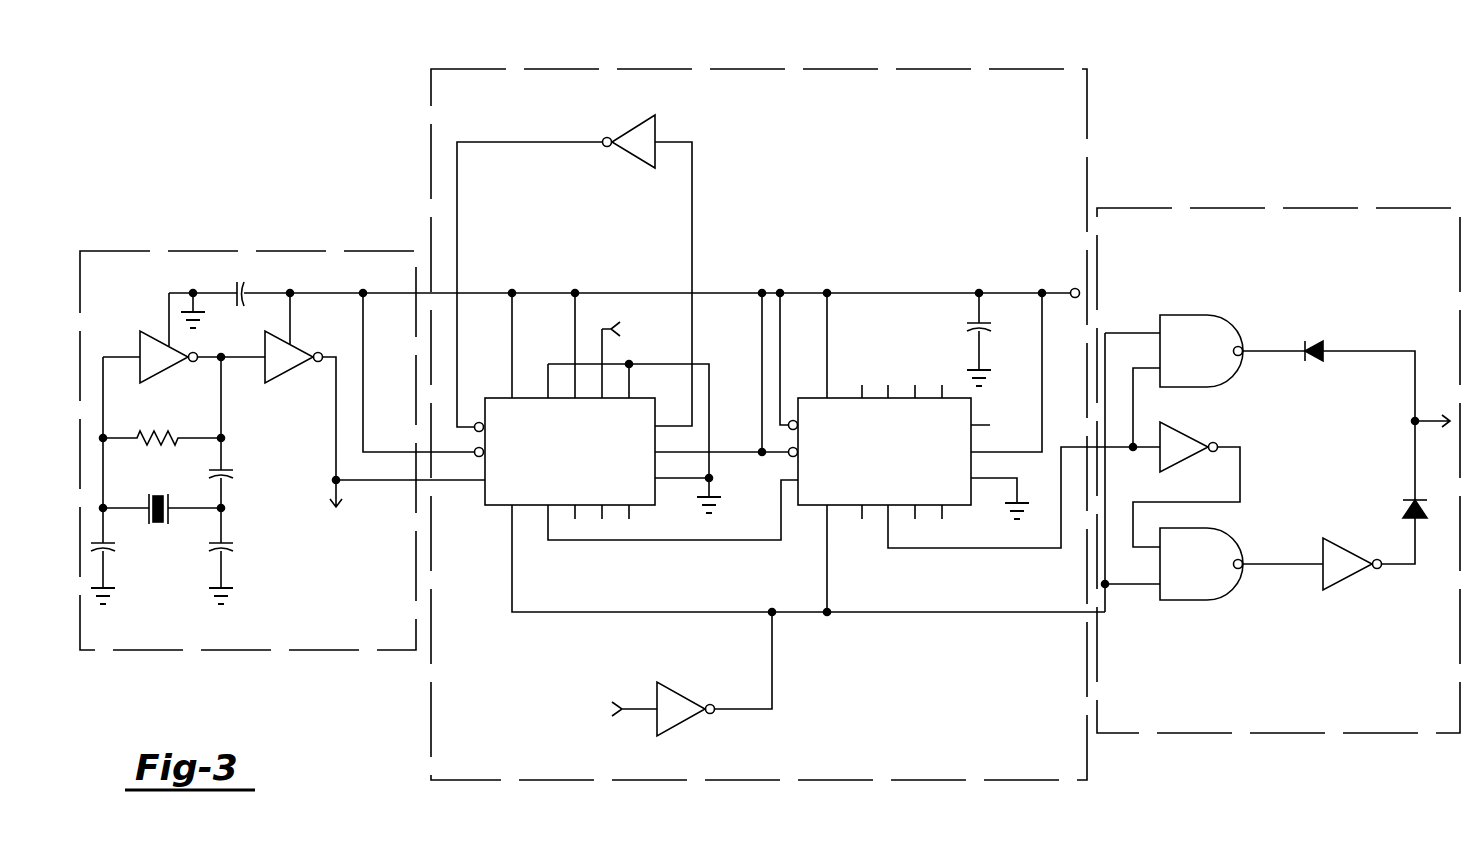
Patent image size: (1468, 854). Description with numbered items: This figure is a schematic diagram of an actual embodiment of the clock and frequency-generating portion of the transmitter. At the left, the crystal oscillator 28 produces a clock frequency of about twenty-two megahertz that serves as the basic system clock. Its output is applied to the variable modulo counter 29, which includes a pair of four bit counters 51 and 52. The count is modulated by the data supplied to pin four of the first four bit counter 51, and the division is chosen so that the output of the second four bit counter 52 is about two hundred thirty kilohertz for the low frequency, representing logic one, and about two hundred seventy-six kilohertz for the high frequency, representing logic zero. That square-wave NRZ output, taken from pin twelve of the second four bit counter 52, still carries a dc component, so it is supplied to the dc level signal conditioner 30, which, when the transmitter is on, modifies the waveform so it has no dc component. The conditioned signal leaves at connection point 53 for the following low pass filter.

The crystal oscillator 28 is at (230, 251).
The variable modulo counter 29 is at (1066, 69).
The dc level signal conditioner 30 is at (1283, 208).
The first four bit counter 51 is at (655, 398).
The second four bit counter 52 is at (971, 398).
The connection point 53 is at (1416, 421).